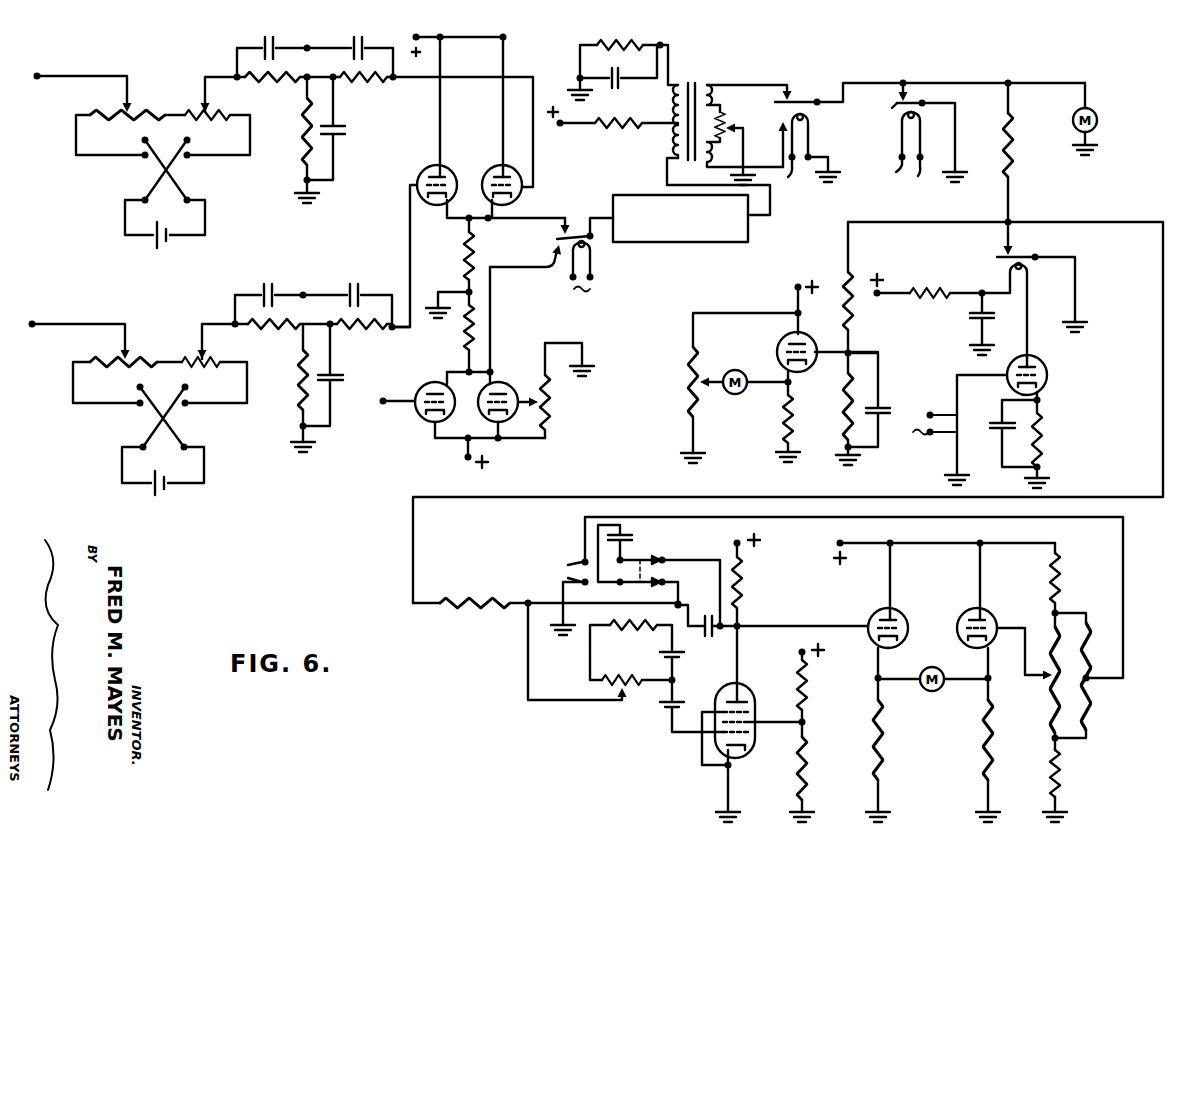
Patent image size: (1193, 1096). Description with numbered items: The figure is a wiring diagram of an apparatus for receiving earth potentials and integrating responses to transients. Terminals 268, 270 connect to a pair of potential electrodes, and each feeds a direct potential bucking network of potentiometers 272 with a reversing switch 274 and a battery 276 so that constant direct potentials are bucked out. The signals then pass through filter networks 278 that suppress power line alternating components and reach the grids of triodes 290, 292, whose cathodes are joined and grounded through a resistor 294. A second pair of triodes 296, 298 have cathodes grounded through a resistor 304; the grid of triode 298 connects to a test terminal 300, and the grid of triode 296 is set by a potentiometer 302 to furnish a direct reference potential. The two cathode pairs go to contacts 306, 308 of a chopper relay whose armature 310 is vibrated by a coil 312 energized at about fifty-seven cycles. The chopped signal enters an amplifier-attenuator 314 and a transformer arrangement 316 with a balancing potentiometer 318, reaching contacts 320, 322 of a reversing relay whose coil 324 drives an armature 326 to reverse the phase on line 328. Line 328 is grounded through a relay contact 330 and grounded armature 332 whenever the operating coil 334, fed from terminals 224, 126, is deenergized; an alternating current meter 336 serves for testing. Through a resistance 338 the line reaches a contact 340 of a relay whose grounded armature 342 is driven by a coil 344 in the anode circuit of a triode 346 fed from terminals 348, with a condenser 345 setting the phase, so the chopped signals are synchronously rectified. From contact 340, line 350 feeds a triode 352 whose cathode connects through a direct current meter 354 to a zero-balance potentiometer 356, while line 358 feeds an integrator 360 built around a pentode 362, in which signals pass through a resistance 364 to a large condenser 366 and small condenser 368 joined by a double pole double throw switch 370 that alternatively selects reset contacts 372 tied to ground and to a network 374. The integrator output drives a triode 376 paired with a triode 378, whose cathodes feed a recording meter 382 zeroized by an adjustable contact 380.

The terminal 126 is at (919, 173).
The terminal 224 is at (884, 168).
The terminal 268 is at (37, 82).
The terminal 270 is at (32, 333).
The potentiometers 272 is at (172, 103).
The reversing switch 274 is at (174, 178).
The battery 276 is at (150, 248).
The filter network 278 is at (342, 90).
The triode 290 is at (490, 168).
The triode 292 is at (426, 168).
The resistor 294 is at (478, 264).
The triode 296 is at (480, 421).
The triode 298 is at (426, 428).
The terminal 300 is at (388, 415).
The potentiometer 302 is at (552, 398).
The resistor 304 is at (462, 332).
The contact 306 is at (578, 229).
The contact 308 is at (526, 269).
The armature 310 is at (594, 252).
The coil 312 is at (604, 285).
The amplifier-attenuator 314 is at (686, 243).
The transformer arrangement 316 is at (699, 186).
The potentiometer 318 is at (744, 129).
The contact 320 is at (788, 94).
The contact 322 is at (779, 117).
The coil 324 is at (811, 121).
The armature 326 is at (818, 98).
The line 328 is at (920, 76).
The relay contact 330 is at (899, 103).
The armature 332 is at (896, 108).
The operating coil 334 is at (921, 116).
The alternating current meter 336 is at (1098, 118).
The resistance 338 is at (1013, 155).
The contact 340 is at (1002, 253).
The armature 342 is at (1038, 254).
The energizing coil 344 is at (1004, 268).
The condenser 345 is at (970, 316).
The triode 346 is at (1045, 373).
The terminals 348 is at (925, 414).
The line 350 is at (880, 222).
The triode 352 is at (781, 357).
The direct current meter 354 is at (736, 394).
The potentiometer 356 is at (690, 368).
The line 358 is at (1160, 430).
The integrator 360 is at (652, 720).
The pentode 362 is at (712, 704).
The resistance 364 is at (458, 610).
The condenser 366 is at (630, 533).
The condenser 368 is at (703, 632).
The double pole double throw switch 370 is at (640, 554).
The contacts 372 is at (830, 597).
The network 374 is at (1095, 688).
The triode 376 is at (870, 620).
The triode 378 is at (995, 622).
The contact 380 is at (1048, 686).
The meter 382 is at (932, 692).